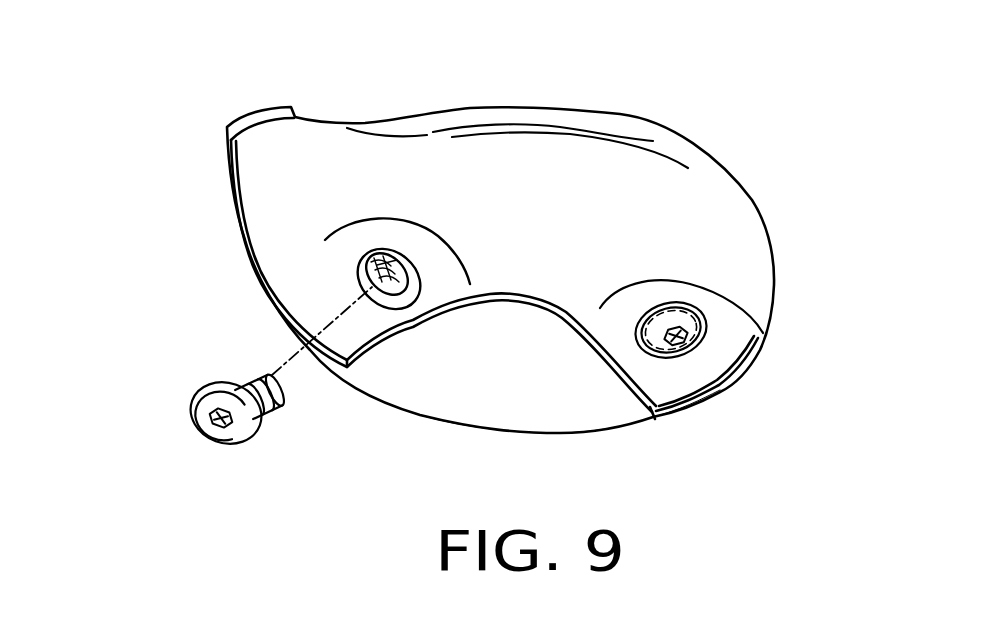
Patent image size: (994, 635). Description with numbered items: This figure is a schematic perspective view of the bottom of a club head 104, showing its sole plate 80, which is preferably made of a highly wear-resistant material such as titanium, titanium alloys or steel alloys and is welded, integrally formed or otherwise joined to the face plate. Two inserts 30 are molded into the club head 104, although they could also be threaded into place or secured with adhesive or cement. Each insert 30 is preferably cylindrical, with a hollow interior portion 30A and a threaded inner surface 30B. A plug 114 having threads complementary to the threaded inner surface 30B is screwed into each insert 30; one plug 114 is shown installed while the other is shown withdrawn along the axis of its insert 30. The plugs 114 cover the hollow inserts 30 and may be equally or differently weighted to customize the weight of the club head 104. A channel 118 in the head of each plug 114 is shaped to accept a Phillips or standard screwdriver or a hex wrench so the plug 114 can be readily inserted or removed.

The club head 104 is at (630, 84).
The insert 30 is at (424, 285).
The hollow interior portion 30A is at (401, 264).
The threaded inner surface 30B is at (364, 273).
The plug 114 is at (690, 322).
The channel 118 is at (679, 345).
The sole plate 80 is at (587, 410).